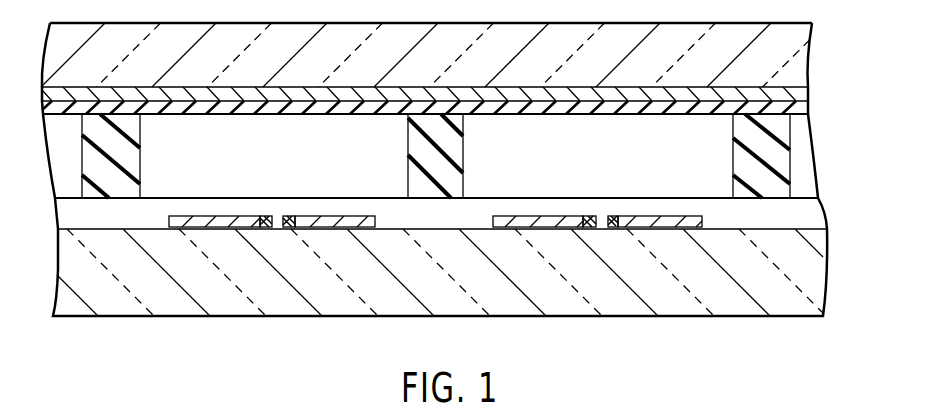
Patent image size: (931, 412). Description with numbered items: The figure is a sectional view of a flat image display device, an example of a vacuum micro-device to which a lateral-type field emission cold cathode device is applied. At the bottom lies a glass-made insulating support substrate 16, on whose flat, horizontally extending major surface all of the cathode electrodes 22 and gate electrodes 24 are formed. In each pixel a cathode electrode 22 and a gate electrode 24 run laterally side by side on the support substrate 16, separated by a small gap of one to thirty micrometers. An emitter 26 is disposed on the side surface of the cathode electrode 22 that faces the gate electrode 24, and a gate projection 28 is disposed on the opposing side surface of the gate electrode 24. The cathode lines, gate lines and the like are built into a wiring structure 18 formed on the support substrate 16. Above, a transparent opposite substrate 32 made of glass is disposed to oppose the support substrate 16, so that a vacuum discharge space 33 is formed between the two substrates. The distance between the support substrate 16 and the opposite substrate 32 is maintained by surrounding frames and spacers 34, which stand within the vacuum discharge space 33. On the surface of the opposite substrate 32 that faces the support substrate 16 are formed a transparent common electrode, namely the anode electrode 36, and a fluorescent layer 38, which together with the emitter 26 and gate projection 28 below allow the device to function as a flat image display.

The support substrate 16 is at (812, 263).
The wiring structure 18 is at (810, 216).
The cathode electrode 22 is at (210, 228).
The gate electrode 24 is at (335, 228).
The emitter 26 is at (260, 228).
The gate projection 28 is at (287, 228).
The opposite substrate 32 is at (802, 48).
The vacuum discharge space 33 is at (160, 162).
The spacer 34 is at (778, 153).
The anode electrode 36 is at (806, 92).
The fluorescent layer 38 is at (806, 105).